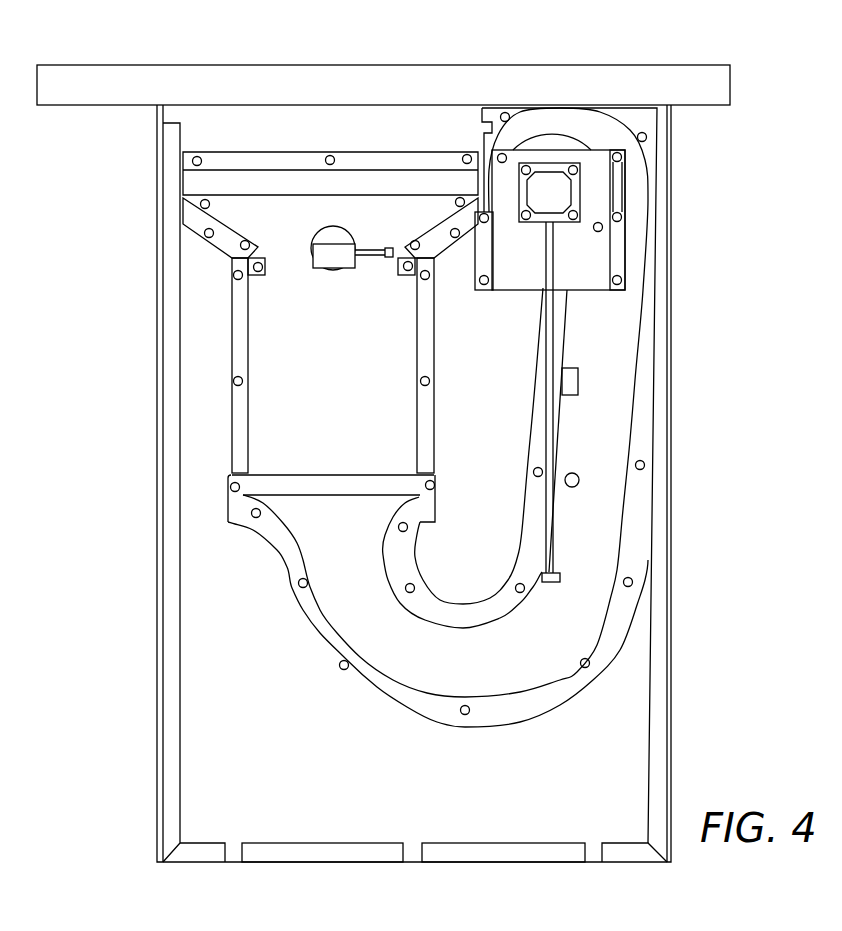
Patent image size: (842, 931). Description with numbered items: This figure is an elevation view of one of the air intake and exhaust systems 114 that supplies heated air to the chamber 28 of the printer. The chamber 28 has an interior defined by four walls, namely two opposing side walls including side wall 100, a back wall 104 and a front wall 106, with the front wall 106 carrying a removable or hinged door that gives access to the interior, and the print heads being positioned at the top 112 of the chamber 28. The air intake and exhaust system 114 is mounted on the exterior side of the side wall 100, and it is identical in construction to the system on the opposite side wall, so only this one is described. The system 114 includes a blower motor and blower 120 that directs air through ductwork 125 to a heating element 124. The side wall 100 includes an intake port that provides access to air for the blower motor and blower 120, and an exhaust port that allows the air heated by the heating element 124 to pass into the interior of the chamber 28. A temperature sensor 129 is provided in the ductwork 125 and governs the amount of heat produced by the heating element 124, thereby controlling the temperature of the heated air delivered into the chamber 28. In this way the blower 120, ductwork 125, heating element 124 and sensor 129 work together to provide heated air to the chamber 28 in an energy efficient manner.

The chamber 28 is at (103, 666).
The side wall 100 is at (262, 725).
The back wall 104 is at (155, 478).
The front wall 106 is at (680, 433).
The top 112 is at (714, 58).
The air intake and exhaust system 114 is at (392, 716).
The blower motor and blower 120 is at (588, 192).
The heating element 124 is at (382, 410).
The ductwork 125 is at (490, 677).
The temperature sensor 129 is at (579, 482).